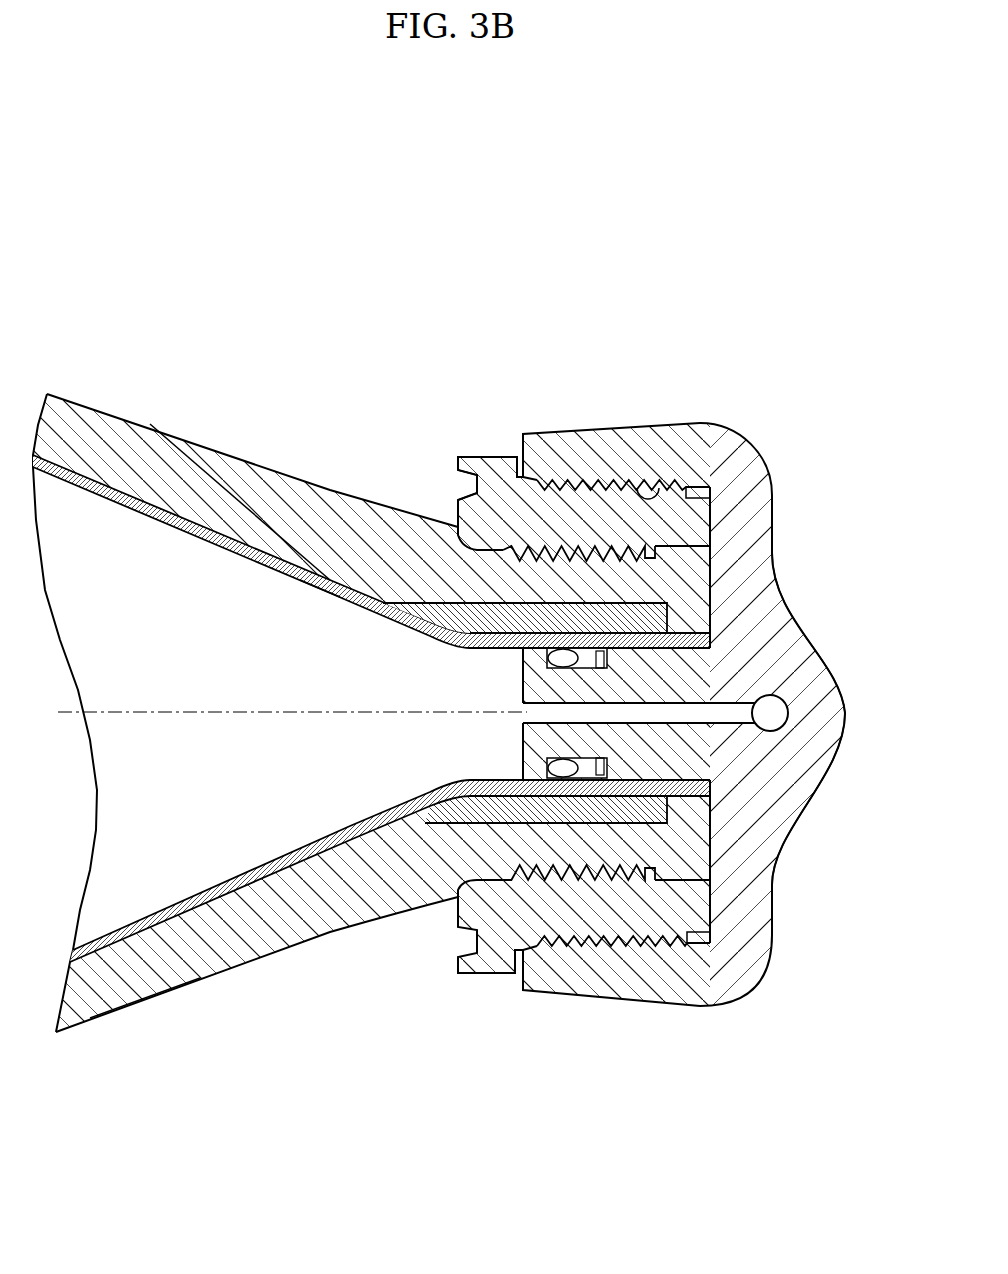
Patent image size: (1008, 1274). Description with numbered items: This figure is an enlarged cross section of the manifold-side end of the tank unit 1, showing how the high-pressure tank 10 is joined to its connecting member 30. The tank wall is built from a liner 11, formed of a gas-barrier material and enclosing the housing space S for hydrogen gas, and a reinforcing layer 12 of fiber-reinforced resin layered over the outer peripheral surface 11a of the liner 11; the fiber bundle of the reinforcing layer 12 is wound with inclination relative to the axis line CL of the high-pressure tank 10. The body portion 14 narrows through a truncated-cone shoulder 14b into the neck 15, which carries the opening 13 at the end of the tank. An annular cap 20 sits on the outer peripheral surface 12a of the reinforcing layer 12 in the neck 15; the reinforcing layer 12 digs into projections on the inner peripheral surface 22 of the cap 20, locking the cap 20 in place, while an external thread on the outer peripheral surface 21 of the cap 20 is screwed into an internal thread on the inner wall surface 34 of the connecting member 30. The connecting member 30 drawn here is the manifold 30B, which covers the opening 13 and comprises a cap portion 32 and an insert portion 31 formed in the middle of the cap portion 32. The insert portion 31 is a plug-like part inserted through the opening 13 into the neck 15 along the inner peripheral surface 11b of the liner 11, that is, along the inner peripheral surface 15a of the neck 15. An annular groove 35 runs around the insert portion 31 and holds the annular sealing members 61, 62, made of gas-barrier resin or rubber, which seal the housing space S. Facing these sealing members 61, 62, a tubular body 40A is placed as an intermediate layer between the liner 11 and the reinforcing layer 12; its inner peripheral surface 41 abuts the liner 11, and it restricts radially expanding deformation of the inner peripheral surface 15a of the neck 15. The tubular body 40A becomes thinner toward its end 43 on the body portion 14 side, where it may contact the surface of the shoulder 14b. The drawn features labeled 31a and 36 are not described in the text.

The tank unit 1 is at (325, 285).
The high-pressure tank 10 is at (135, 413).
The liner 11 is at (109, 492).
The outer peripheral surface 11a is at (240, 540).
The inner peripheral surface 11b is at (222, 548).
The reinforcing layer 12 is at (225, 973).
The outer peripheral surface 12a is at (655, 547).
The opening 13 is at (660, 660).
The body portion 14 is at (138, 1005).
The shoulder 14b is at (328, 930).
The neck 15 is at (517, 850).
The inner peripheral surface 15a is at (775, 696).
The cap 20 is at (493, 455).
The outer peripheral surface 21 is at (577, 480).
The inner peripheral surface 22 is at (480, 500).
The connecting member 30 is at (754, 978).
The manifold 30B is at (790, 797).
The insert portion 31 is at (668, 748).
The step portion 31a is at (708, 795).
The cap portion 32 is at (790, 620).
The inner wall surface 34 is at (660, 492).
The annular groove 35 is at (560, 662).
The hole 36 is at (784, 722).
The tubular body 40A is at (453, 627).
The inner peripheral surface 41 is at (528, 640).
The end 43 is at (340, 598).
The annular sealing member 61 is at (560, 770).
The annular sealing member 62 is at (592, 757).
The housing space S is at (169, 640).
The axis line CL is at (95, 718).